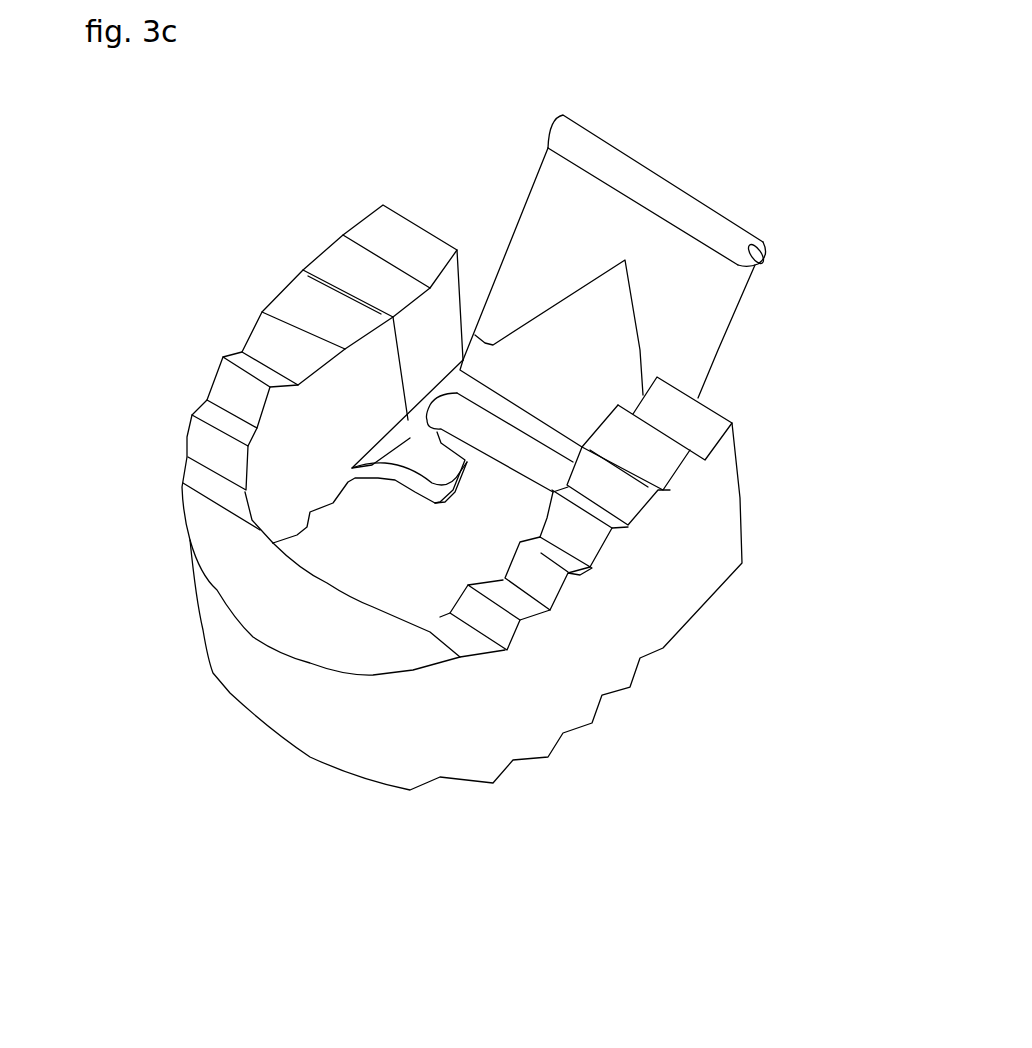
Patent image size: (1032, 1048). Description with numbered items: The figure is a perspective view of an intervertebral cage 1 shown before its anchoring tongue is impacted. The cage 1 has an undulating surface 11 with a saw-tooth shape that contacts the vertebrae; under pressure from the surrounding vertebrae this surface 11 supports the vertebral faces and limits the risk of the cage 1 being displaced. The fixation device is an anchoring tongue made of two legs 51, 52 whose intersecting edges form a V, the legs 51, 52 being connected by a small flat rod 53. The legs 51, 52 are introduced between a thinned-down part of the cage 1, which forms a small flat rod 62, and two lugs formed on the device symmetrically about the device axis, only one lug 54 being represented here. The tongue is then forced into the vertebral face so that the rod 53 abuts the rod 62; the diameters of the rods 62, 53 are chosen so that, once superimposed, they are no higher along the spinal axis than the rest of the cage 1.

The intervertebral cage 1 is at (683, 545).
The undulating surface 11 is at (350, 263).
The leg 51 is at (520, 283).
The leg 52 is at (680, 328).
The small rod 53 is at (667, 198).
The lug 54 is at (432, 467).
The small rod 62 is at (535, 433).